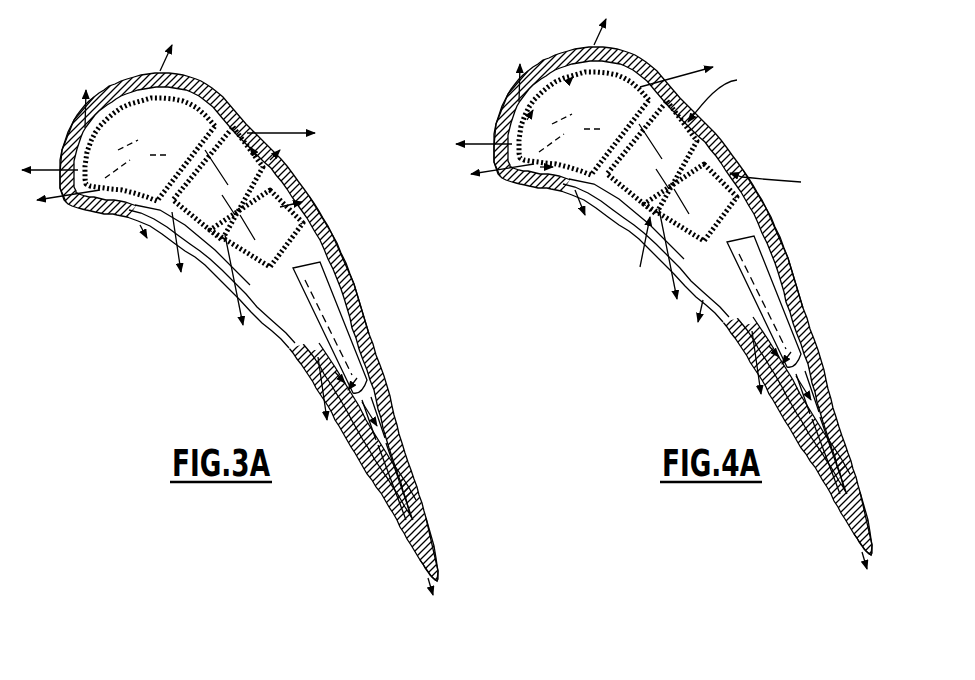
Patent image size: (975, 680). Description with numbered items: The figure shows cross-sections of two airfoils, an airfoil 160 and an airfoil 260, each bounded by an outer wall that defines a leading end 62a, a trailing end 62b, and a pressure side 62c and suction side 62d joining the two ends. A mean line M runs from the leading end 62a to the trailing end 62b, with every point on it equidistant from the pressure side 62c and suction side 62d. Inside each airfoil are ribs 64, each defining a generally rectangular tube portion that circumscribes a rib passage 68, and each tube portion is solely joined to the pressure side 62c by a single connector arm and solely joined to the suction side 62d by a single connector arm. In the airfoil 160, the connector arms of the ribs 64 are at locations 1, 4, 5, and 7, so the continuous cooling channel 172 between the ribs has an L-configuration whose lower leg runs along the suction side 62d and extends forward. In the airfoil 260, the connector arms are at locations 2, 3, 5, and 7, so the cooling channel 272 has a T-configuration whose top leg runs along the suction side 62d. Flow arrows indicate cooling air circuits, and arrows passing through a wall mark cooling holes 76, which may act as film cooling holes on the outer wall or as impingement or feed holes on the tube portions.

In FIG. 3A, the airfoil 160 is at (290, 97).
In FIG. 4A, the airfoil 260 is at (768, 130).
In FIG. 3A, the leading end 62a is at (62, 200).
In FIG. 4A, the leading end 62a is at (513, 160).
In FIG. 3A, the trailing end 62b is at (438, 573).
In FIG. 4A, the trailing end 62b is at (873, 547).
In FIG. 3A, the pressure side 62c is at (285, 347).
In FIG. 4A, the pressure side 62c is at (733, 337).
In FIG. 3A, the suction side 62d is at (334, 236).
In FIG. 4A, the suction side 62d is at (782, 237).
In FIG. 3A, the rib 64 is at (268, 151).
In FIG. 4A, the rib 64 is at (758, 131).
In FIG. 3A, the rib passage 68 is at (200, 143).
In FIG. 4A, the rib passage 68 is at (630, 113).
In FIG. 3A, the cooling holes 76 is at (265, 125).
In FIG. 3A, the cooling channel 172 is at (300, 166).
In FIG. 4A, the cooling channel 272 is at (640, 267).
In FIG. 3A, the connector arm location 1 is at (243, 124).
In FIG. 4A, the connector arm location 2 is at (703, 140).
In FIG. 4A, the connector arm location 3 is at (628, 150).
In FIG. 3A, the connector arm location 4 is at (172, 213).
In FIG. 3A, the connector arm location 5 is at (278, 193).
In FIG. 4A, the connector arm location 5 is at (730, 167).
In FIG. 3A, the connector arm location 7 is at (226, 262).
In FIG. 4A, the connector arm location 7 is at (687, 253).
In FIG. 3A, the mean line M is at (320, 322).
In FIG. 4A, the mean line M is at (753, 293).